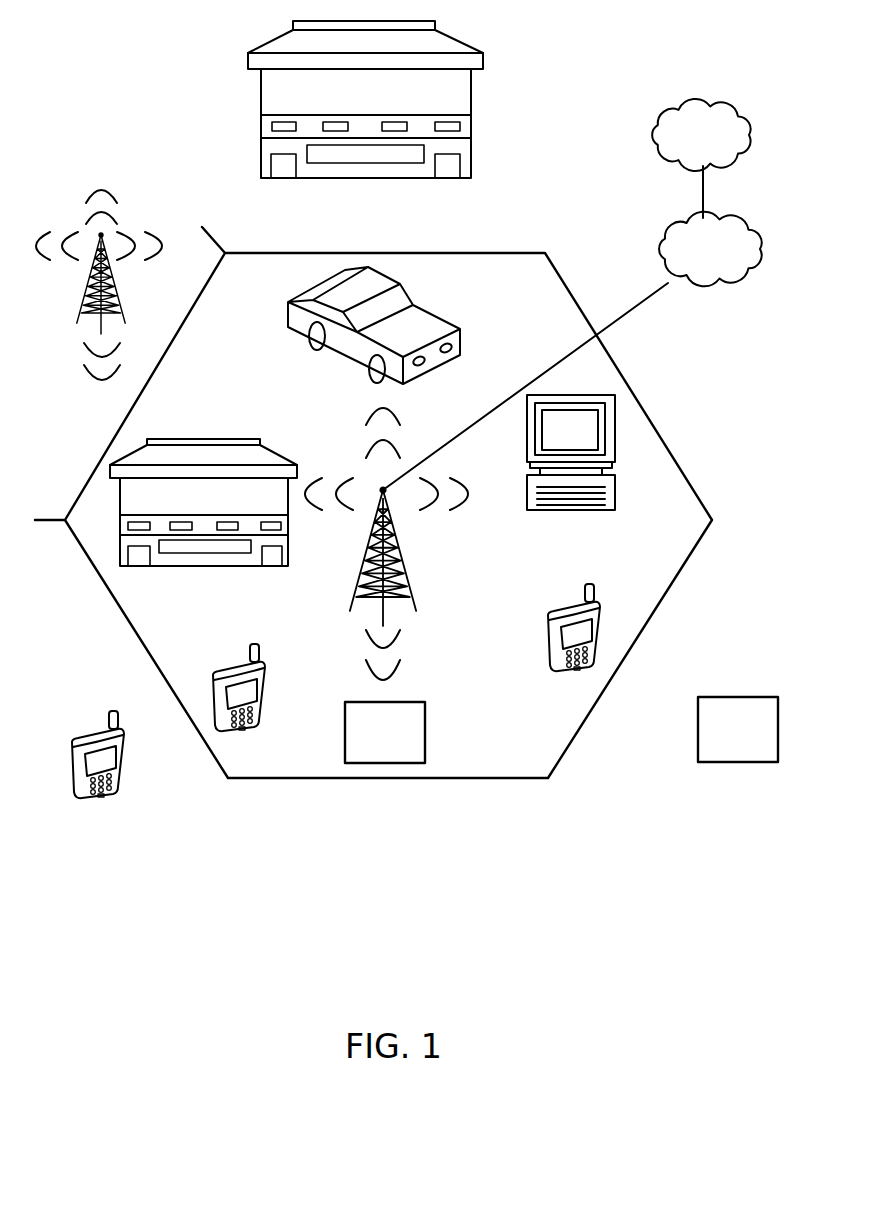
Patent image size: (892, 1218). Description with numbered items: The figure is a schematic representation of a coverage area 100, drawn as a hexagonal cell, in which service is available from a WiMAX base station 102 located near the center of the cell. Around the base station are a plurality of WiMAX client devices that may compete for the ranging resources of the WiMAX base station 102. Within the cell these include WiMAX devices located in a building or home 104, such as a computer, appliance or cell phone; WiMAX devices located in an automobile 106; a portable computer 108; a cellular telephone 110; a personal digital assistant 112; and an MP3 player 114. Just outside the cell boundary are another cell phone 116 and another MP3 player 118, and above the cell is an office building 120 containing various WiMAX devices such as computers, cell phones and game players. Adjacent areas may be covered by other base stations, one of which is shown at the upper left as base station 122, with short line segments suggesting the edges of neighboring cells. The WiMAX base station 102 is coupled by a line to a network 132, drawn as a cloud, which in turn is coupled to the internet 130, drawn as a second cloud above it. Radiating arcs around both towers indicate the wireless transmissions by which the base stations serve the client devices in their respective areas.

The coverage area 100 is at (448, 779).
The WiMAX base station 102 is at (406, 590).
The building or home 104 is at (205, 440).
The automobile 106 is at (462, 348).
The portable computer 108 is at (616, 496).
The cellular telephone 110 is at (550, 667).
The personal digital assistant 112 is at (268, 708).
The MP3 player 114 is at (427, 733).
The cell phone 116 is at (118, 777).
The MP3 player 118 is at (697, 744).
The office building 120 is at (471, 146).
The base station 122 is at (120, 308).
The internet 130 is at (650, 157).
The network 132 is at (653, 243).